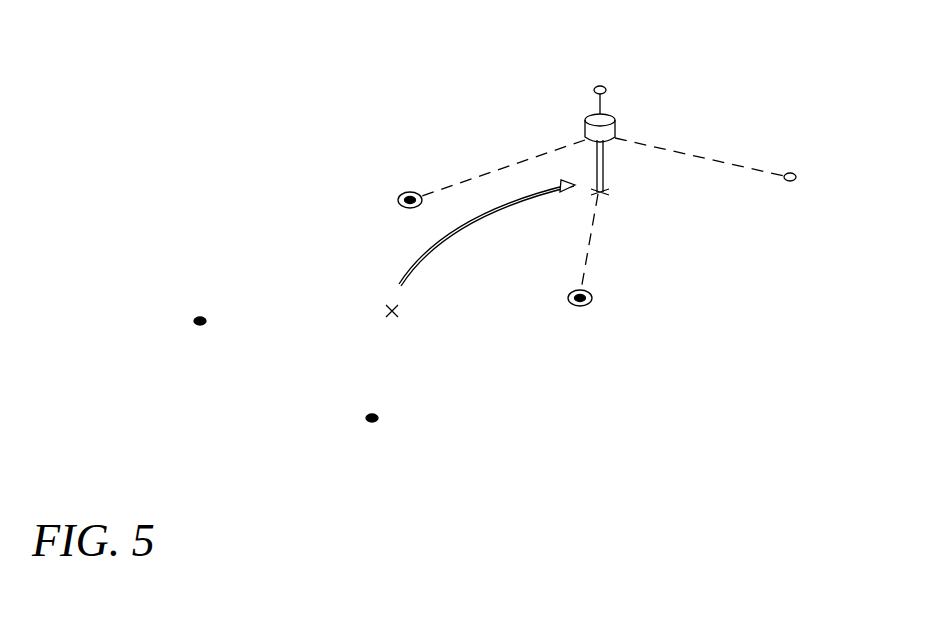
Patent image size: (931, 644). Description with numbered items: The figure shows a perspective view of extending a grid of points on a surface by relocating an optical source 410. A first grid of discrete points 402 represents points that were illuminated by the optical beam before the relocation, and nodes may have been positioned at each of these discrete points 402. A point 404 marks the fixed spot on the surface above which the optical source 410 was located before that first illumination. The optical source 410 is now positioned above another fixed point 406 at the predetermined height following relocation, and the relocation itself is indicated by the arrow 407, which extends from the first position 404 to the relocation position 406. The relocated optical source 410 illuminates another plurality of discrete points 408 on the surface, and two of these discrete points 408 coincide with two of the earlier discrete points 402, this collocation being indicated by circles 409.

The discrete points 402 is at (190, 321).
The point 404 is at (393, 322).
The fixed point 406 is at (610, 190).
The arrow 407 is at (458, 232).
The discrete points 408 is at (604, 80).
The circles 409 is at (401, 190).
The optical source 410 is at (602, 125).